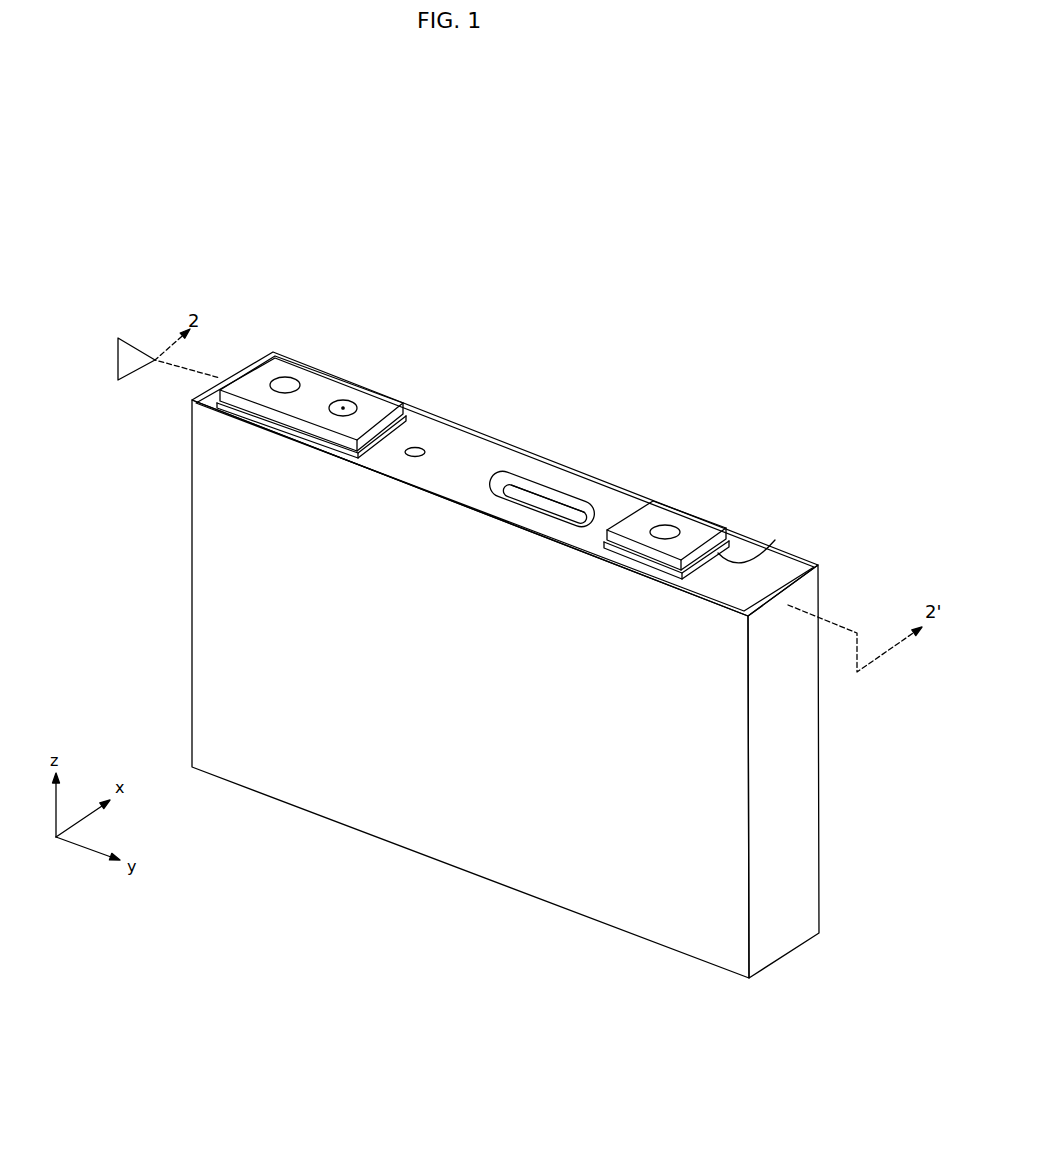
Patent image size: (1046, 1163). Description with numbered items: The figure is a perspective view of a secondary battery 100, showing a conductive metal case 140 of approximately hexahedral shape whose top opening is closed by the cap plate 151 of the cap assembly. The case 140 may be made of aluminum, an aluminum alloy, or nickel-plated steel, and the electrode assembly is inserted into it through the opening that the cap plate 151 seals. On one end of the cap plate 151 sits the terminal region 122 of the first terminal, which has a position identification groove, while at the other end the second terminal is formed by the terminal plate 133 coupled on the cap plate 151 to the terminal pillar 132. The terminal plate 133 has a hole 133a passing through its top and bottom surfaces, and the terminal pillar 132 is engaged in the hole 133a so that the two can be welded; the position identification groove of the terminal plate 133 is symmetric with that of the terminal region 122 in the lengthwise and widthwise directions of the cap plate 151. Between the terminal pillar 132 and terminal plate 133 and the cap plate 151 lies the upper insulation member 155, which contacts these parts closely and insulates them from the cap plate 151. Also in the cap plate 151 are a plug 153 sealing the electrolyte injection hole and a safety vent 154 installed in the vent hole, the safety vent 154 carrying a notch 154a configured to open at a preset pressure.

The secondary battery 100 is at (870, 330).
The terminal region 122 is at (325, 388).
The terminal pillar 132 is at (658, 524).
The terminal plate 133 is at (678, 520).
The hole 133a is at (728, 530).
The case 140 is at (800, 783).
The cap plate 151 is at (476, 445).
The plug 153 is at (418, 446).
The safety vent 154 is at (530, 485).
The notch 154a is at (562, 512).
The upper insulation member 155 is at (773, 541).